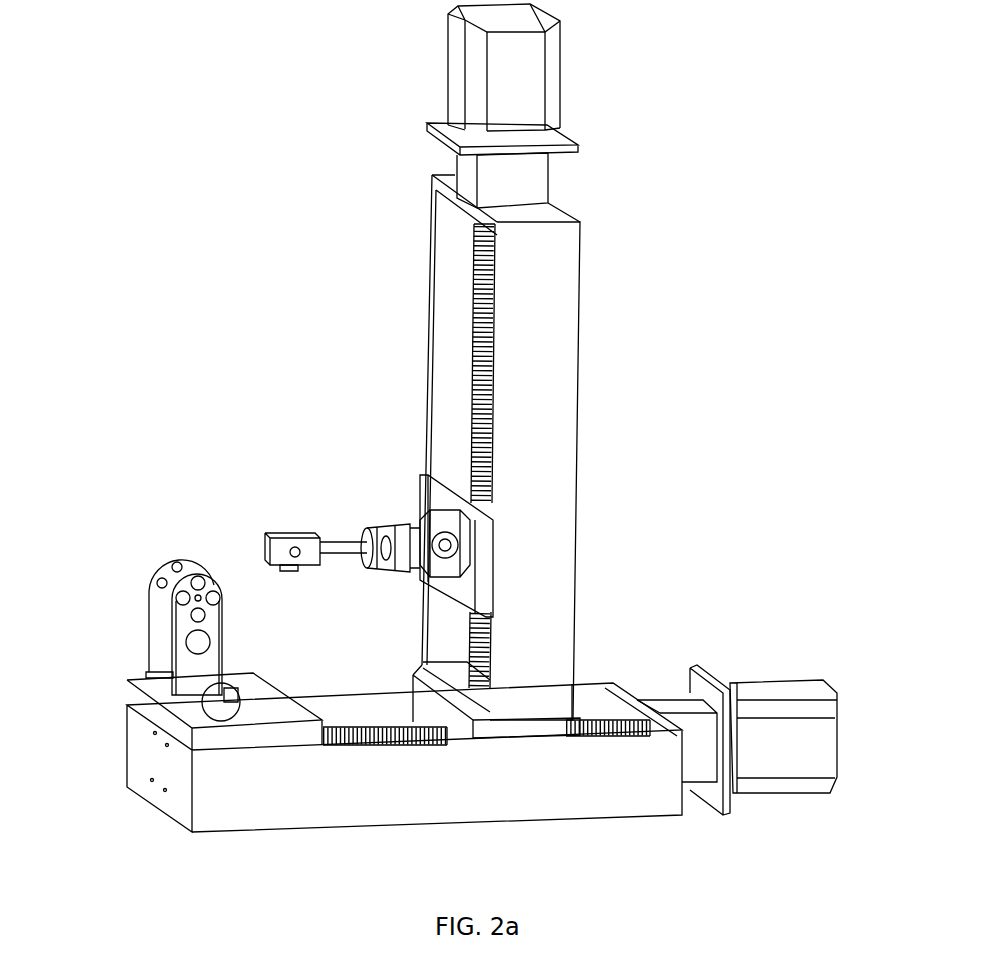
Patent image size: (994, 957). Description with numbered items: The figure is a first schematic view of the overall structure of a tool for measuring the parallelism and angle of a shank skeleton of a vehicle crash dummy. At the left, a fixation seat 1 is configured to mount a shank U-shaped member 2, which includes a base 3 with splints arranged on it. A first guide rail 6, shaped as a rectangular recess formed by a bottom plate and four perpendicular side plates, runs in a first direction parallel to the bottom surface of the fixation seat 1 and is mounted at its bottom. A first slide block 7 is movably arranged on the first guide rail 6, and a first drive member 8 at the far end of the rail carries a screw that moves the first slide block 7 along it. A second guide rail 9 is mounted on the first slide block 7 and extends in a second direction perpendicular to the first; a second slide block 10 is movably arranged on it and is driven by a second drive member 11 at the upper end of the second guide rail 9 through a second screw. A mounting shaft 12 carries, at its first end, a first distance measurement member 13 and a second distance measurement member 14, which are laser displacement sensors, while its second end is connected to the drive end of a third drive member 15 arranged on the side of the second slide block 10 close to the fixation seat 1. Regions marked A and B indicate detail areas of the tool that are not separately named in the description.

The fixation seat 1 is at (144, 703).
The shank U-shaped member 2 is at (148, 622).
The base 3 is at (150, 675).
The roller detail A is at (203, 707).
The coupling detail B is at (381, 533).
The first guide rail 6 is at (385, 827).
The first slide block 7 is at (498, 734).
The first drive member 8 is at (841, 742).
The second guide rail 9 is at (583, 472).
The second slide block 10 is at (418, 478).
The second drive member 11 is at (563, 66).
The mounting shaft 12 is at (378, 532).
The first distance measurement member 13 is at (288, 548).
The second distance measurement member 14 is at (326, 538).
The third drive member 15 is at (448, 562).